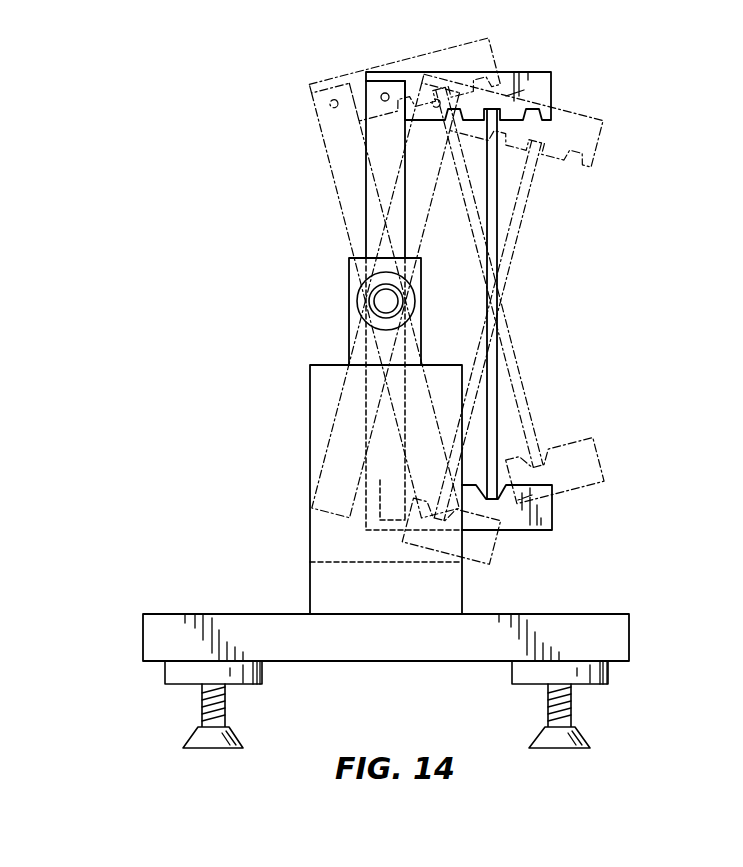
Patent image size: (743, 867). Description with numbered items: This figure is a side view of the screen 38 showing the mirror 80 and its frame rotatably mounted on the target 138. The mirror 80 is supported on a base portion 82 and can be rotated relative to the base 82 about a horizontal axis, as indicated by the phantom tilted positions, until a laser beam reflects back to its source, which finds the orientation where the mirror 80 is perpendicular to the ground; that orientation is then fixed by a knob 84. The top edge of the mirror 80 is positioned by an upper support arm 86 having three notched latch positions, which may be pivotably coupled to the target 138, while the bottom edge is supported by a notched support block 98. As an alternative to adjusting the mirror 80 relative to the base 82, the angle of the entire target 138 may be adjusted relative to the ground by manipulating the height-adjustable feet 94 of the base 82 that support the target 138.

The target 138 is at (247, 193).
The upper support arm 86 is at (538, 72).
The mirror 80 is at (497, 190).
The knob 84 is at (382, 301).
The screen 38 is at (310, 393).
The notched support block 98 is at (518, 523).
The base portion 82 is at (272, 625).
The height-adjustable feet 94 is at (202, 706).